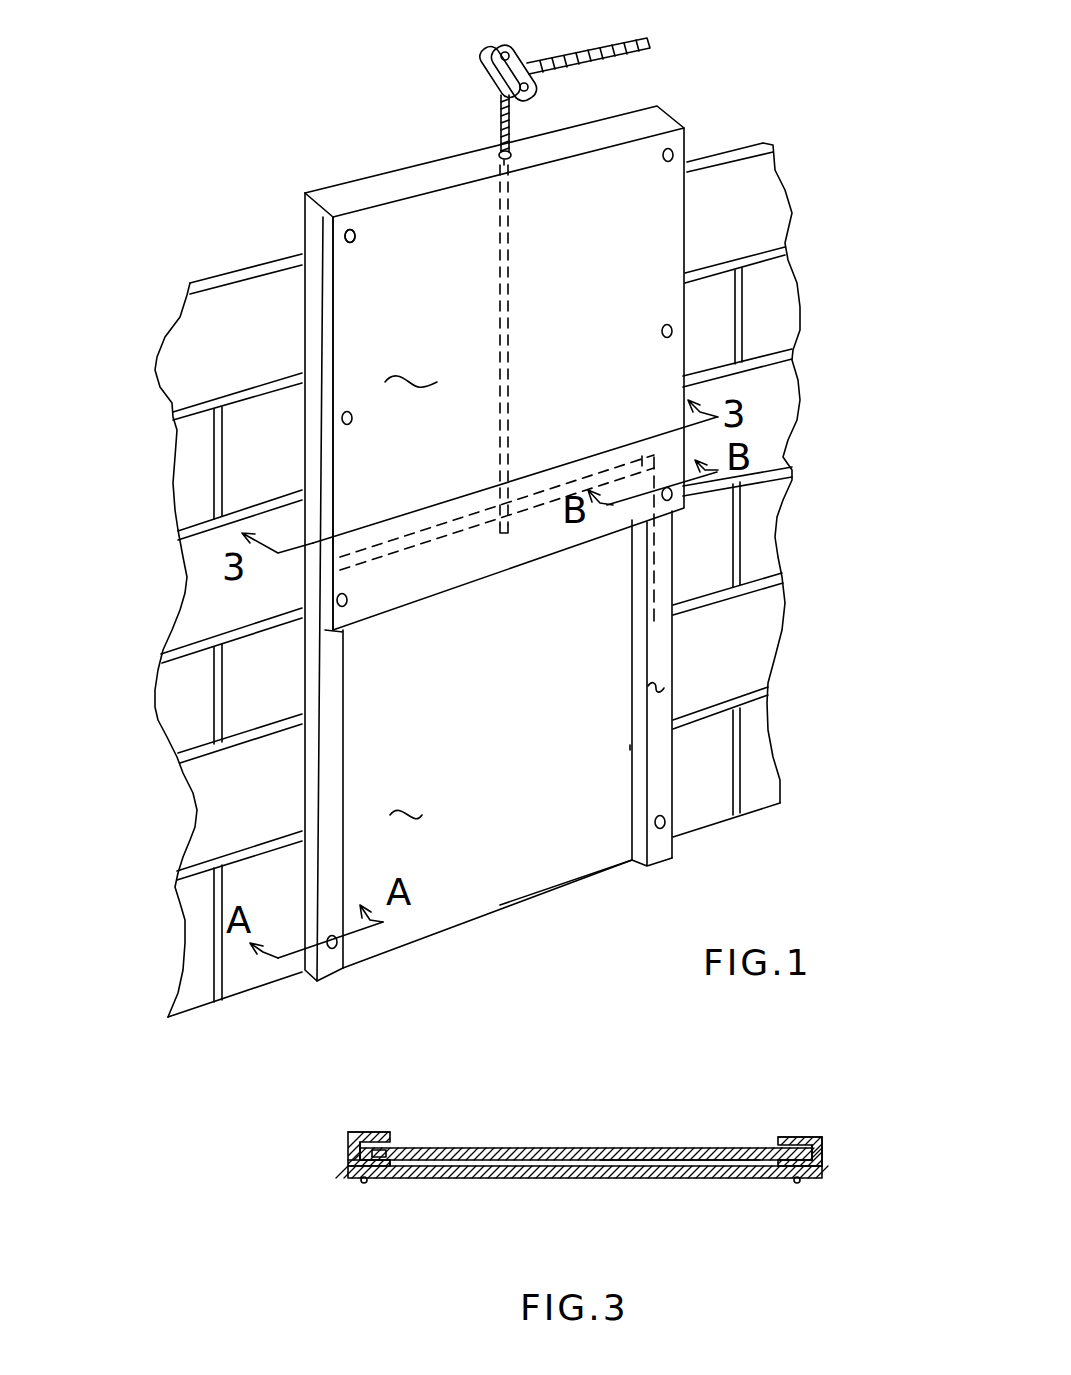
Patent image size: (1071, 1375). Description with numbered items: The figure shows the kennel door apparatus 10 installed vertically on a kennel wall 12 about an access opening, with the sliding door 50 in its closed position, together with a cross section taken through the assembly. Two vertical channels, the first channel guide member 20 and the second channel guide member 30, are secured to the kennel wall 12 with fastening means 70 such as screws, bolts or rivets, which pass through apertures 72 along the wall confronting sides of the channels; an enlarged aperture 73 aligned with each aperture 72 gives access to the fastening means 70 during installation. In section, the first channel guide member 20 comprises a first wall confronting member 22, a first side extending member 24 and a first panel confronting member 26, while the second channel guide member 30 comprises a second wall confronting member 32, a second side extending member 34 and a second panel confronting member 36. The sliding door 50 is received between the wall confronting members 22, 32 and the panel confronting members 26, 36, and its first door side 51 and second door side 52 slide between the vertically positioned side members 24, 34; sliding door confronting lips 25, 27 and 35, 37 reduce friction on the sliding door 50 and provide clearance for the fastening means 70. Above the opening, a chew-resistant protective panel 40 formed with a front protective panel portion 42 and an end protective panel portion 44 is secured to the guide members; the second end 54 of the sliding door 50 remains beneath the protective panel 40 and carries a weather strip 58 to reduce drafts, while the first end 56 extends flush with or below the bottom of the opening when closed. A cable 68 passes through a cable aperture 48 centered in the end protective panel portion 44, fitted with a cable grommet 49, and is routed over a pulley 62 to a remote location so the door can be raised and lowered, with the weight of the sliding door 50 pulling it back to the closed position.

In FIG. 1, the kennel door apparatus 10 is at (635, 875).
In FIG. 1, the kennel wall 12 is at (740, 257).
In FIG. 1, the first channel guide member 20 is at (333, 698).
In FIG. 3, the first channel guide member 20 is at (348, 1162).
In FIG. 3, the first wall confronting member 22 is at (367, 1135).
In FIG. 1, the first side extending member 24 is at (313, 820).
In FIG. 3, the first side extending member 24 is at (350, 1152).
In FIG. 3, the sliding door confronting lip 25 is at (392, 1142).
In FIG. 1, the first panel confronting member 26 is at (340, 767).
In FIG. 3, the first panel confronting member 26 is at (353, 1177).
In FIG. 3, the sliding door confronting lip 27 is at (398, 1178).
In FIG. 1, the second channel guide member 30 is at (660, 680).
In FIG. 3, the second channel guide member 30 is at (817, 1138).
In FIG. 3, the second wall confronting member 32 is at (813, 1138).
In FIG. 1, the second side extending member 34 is at (660, 710).
In FIG. 3, the second side extending member 34 is at (820, 1150).
In FIG. 3, the sliding door confronting lip 35 is at (808, 1148).
In FIG. 1, the second panel confronting member 36 is at (663, 578).
In FIG. 3, the second panel confronting member 36 is at (803, 1180).
In FIG. 1, the sliding door confronting lip 37 is at (618, 655).
In FIG. 3, the sliding door confronting lip 37 is at (770, 1175).
In FIG. 1, the protective panel 40 is at (412, 252).
In FIG. 3, the protective panel 40 is at (467, 1183).
In FIG. 1, the front protective panel portion 42 is at (414, 359).
In FIG. 1, the end protective panel portion 44 is at (343, 197).
In FIG. 1, the cable aperture 48 is at (515, 140).
In FIG. 1, the cable grommet 49 is at (650, 89).
In FIG. 1, the sliding door 50 is at (359, 814).
In FIG. 3, the sliding door 50 is at (583, 1150).
In FIG. 1, the first door side 51 is at (373, 845).
In FIG. 1, the second door side 52 is at (623, 747).
In FIG. 1, the second end 54 is at (552, 495).
In FIG. 1, the first end 56 is at (497, 908).
In FIG. 1, the weather strip 58 is at (627, 473).
In FIG. 3, the weather strip 58 is at (670, 1160).
In FIG. 1, the pulley 62 is at (485, 82).
In FIG. 1, the cable 68 is at (498, 135).
In FIG. 3, the fastening means 70 is at (363, 1182).
In FIG. 1, the panel aperture 72 is at (345, 237).
In FIG. 1, the enlarged aperture 73 is at (332, 945).